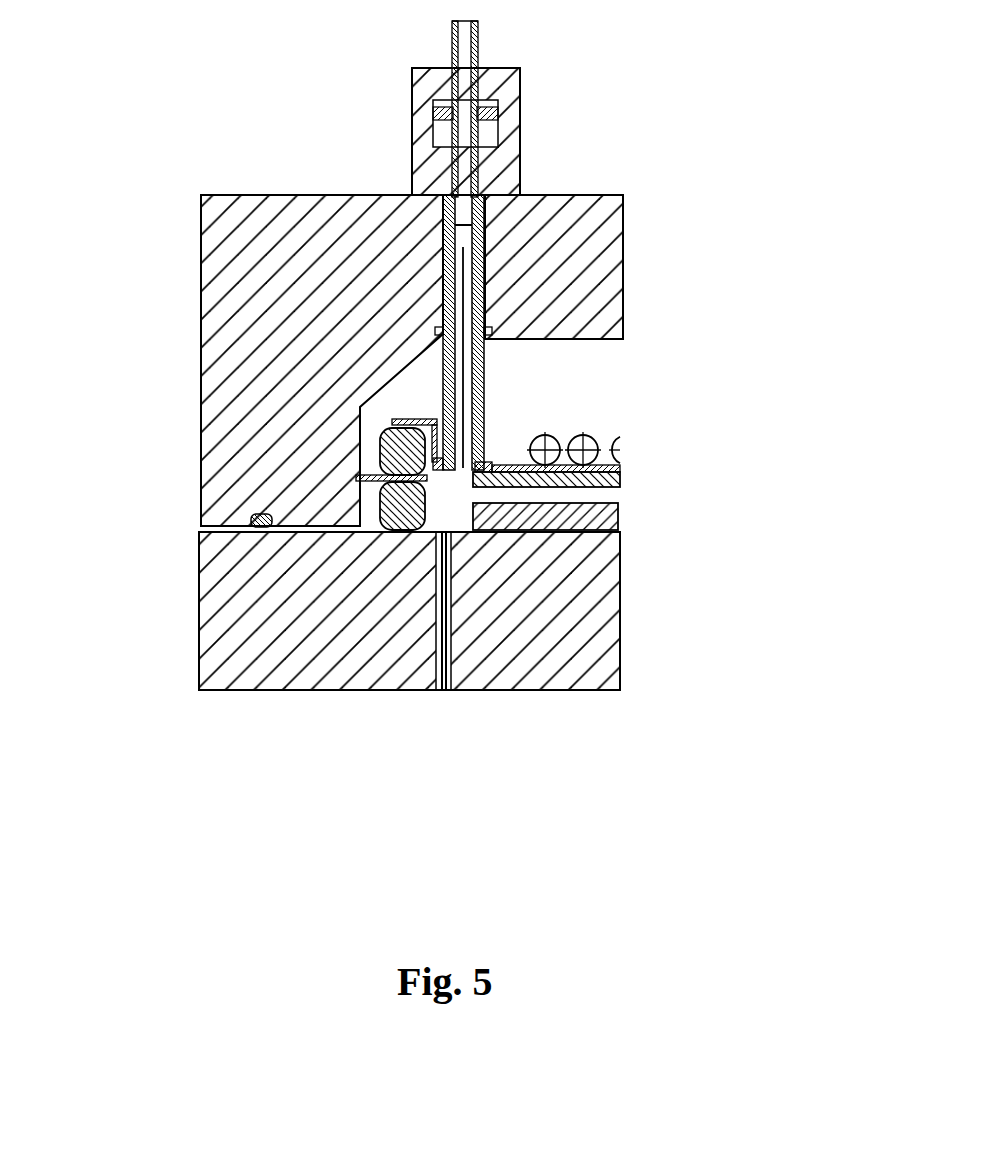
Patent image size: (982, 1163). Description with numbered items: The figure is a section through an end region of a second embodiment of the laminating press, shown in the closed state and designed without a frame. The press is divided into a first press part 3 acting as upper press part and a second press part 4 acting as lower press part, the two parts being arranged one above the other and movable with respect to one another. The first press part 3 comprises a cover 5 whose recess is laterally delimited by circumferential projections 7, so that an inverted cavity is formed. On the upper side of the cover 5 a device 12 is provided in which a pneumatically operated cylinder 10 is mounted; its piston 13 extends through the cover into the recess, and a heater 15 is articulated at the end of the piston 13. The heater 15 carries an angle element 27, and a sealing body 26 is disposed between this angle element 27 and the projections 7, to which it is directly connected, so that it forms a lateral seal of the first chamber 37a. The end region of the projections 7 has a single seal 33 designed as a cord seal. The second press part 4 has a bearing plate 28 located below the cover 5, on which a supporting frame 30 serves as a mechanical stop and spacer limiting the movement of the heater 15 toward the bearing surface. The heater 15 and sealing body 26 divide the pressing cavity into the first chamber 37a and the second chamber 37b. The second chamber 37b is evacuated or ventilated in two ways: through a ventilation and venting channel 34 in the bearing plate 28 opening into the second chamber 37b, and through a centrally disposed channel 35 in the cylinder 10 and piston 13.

The first press part 3 is at (182, 308).
The second press part 4 is at (566, 690).
The cover 5 is at (593, 277).
The projections 7 is at (265, 430).
The cylinder 10 is at (440, 126).
The device 12 is at (495, 88).
The piston 13 is at (478, 240).
The heater 15 is at (589, 422).
The sealing body 26 is at (405, 516).
The angle element 27 is at (425, 418).
The bearing plate 28 is at (592, 605).
The supporting frame 30 is at (597, 522).
The seal 33 is at (262, 520).
The ventilation and venting channel 34 is at (440, 660).
The centrally disposed channel 35 is at (468, 400).
The first chamber 37a is at (572, 370).
The second chamber 37b is at (420, 527).